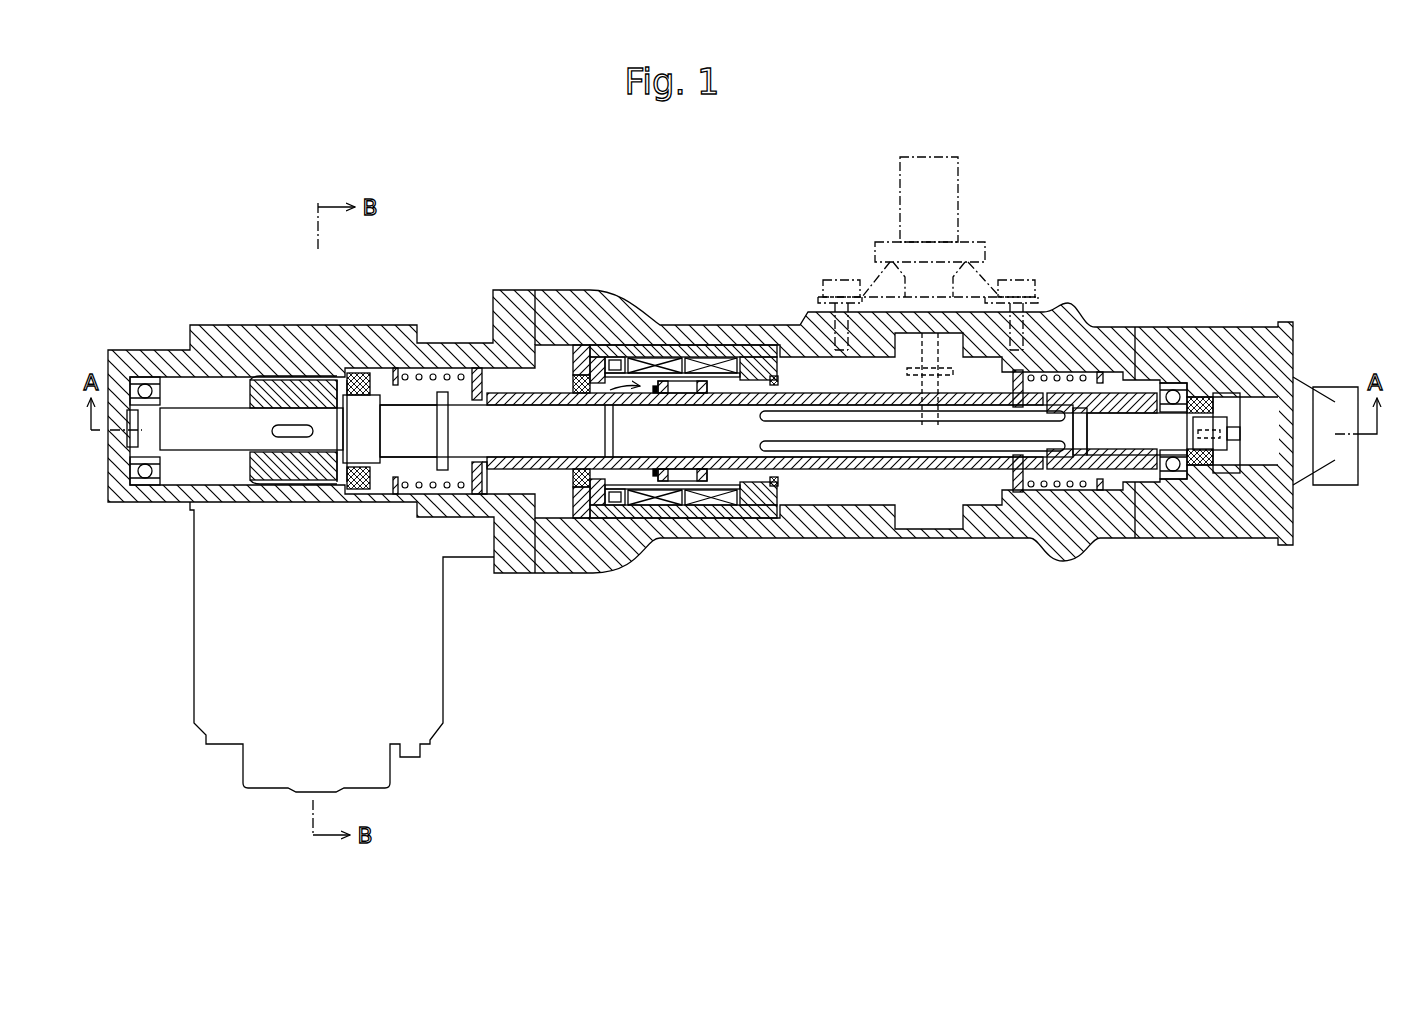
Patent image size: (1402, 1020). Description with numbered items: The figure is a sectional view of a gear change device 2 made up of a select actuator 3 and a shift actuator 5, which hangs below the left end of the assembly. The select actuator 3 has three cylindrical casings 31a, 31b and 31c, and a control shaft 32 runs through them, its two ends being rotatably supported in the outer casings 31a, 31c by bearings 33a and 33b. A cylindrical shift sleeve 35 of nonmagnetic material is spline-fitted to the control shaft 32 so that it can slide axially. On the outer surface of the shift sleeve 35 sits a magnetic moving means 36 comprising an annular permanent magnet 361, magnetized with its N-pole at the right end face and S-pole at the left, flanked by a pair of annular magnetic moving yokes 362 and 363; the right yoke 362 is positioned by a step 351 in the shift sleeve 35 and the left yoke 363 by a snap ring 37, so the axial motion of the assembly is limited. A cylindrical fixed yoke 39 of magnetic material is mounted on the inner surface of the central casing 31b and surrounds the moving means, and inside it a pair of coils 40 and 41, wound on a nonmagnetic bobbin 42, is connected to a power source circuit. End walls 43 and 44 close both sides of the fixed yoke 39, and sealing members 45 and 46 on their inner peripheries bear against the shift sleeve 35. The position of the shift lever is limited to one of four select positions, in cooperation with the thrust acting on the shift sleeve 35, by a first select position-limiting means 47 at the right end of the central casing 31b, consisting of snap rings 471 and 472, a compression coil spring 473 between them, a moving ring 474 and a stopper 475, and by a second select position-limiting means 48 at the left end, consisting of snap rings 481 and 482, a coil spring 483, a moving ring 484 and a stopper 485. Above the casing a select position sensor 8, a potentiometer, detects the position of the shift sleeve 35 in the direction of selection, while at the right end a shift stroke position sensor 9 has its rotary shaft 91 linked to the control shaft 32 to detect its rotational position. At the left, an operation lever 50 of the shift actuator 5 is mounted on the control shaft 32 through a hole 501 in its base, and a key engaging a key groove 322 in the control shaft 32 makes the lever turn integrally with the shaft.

The gear change device 2 is at (700, 389).
The select actuator 3 is at (700, 396).
The shift actuator 5 is at (172, 688).
The select position sensor 8 is at (893, 190).
The shift stroke position sensor 9 is at (1318, 385).
The casing 31a is at (700, 353).
The central casing 31b is at (140, 349).
The casing 31c is at (700, 396).
The control shaft 32 is at (458, 410).
The key groove 322 is at (292, 425).
The bearing 33a is at (138, 487).
The bearing 33b is at (1170, 385).
The shift sleeve 35 is at (843, 470).
The step 351 is at (755, 347).
The magnetic moving means 36 is at (640, 354).
The permanent magnet 361 is at (683, 396).
The moving yoke 362 is at (706, 394).
The moving yoke 363 is at (663, 397).
The snap ring 37 is at (603, 407).
The fixed yoke 39 is at (645, 347).
The coil 40 is at (712, 505).
The coil 41 is at (655, 518).
The bobbin 42 is at (597, 357).
The end wall 43 is at (775, 378).
The end wall 44 is at (578, 357).
The sealing member 45 is at (790, 357).
The sealing member 46 is at (572, 384).
The first select position-limiting means 47 is at (1017, 372).
The snap ring 471 is at (1013, 492).
The snap ring 472 is at (1100, 490).
The compression coil spring 473 is at (1085, 488).
The moving ring 474 is at (1050, 468).
The stopper 475 is at (1055, 398).
The second select position-limiting means 48 is at (396, 368).
The snap ring 481 is at (462, 492).
The snap ring 482 is at (395, 490).
The coil spring 483 is at (405, 372).
The moving ring 484 is at (478, 494).
The stopper 485 is at (443, 392).
The operation lever 50 is at (301, 432).
The hole 501 is at (320, 390).
The rotary shaft 91 is at (1228, 437).